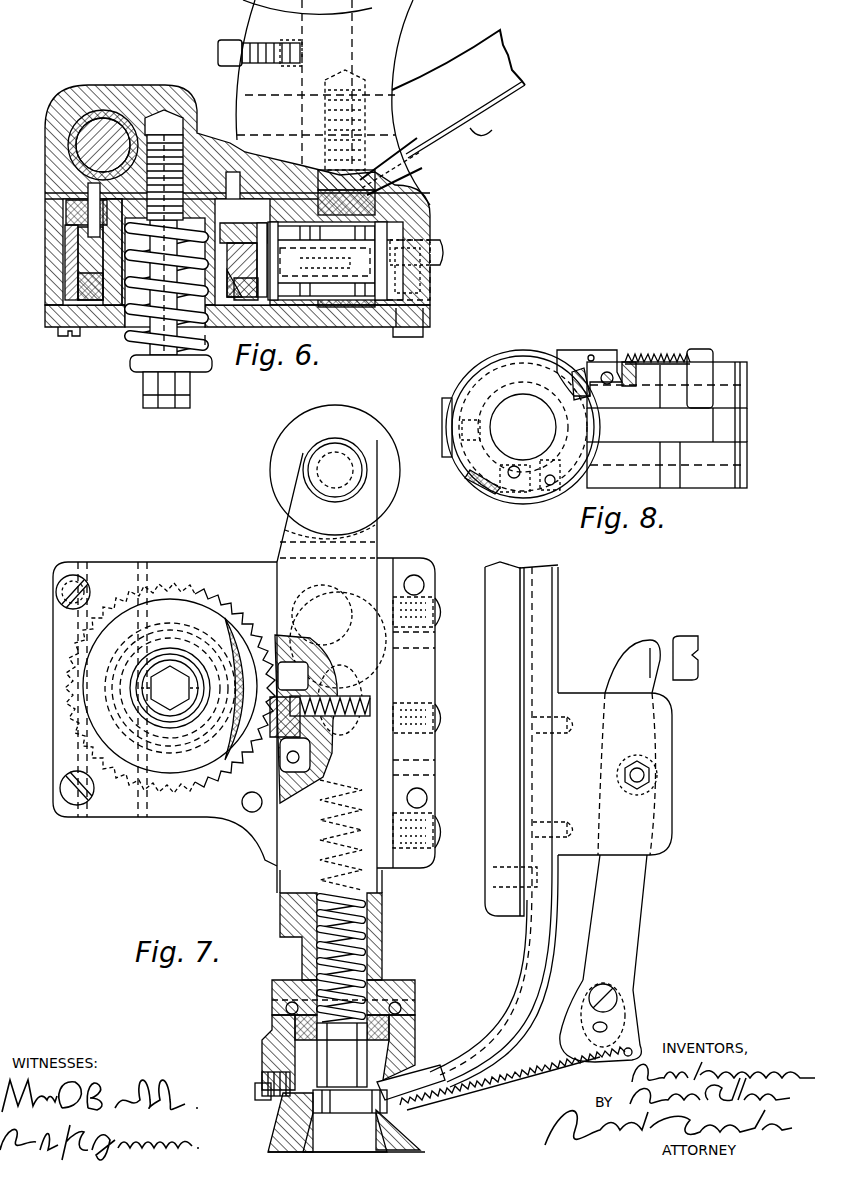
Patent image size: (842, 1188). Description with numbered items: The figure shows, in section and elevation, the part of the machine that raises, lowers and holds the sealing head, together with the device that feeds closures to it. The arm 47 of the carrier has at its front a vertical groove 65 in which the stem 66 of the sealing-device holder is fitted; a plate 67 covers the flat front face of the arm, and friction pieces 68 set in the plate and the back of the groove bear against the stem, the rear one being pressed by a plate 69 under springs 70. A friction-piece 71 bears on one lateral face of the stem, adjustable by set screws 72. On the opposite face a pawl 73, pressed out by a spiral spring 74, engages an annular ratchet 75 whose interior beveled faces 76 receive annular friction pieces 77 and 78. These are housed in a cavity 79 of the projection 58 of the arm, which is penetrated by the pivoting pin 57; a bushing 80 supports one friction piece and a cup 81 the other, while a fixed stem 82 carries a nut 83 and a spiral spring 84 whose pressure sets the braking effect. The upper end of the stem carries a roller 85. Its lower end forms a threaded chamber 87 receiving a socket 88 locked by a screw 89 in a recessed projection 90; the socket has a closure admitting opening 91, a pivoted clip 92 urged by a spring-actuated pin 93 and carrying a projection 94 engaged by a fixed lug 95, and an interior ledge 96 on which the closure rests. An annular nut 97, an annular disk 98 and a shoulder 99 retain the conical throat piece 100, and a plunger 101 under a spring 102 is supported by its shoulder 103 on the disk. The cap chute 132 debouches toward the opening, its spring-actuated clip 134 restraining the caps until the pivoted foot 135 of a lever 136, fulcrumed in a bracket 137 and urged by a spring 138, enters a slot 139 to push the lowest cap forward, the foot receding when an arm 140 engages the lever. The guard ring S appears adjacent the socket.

In FIG. 6, the arm 47 is at (388, 73).
In FIG. 7, the arm 47 is at (430, 670).
In FIG. 6, the pivoting pin 57 is at (103, 145).
In FIG. 6, the projection 58 is at (140, 88).
In FIG. 7, the projection 58 is at (207, 812).
In FIG. 6, the vertical groove 65 is at (387, 225).
In FIG. 7, the vertical groove 65 is at (293, 578).
In FIG. 6, the stem 66 is at (310, 280).
In FIG. 7, the stem 66 is at (370, 585).
In FIG. 6, the plate 67 is at (388, 317).
In FIG. 7, the plate 67 is at (122, 810).
In FIG. 6, the friction pieces 68 is at (375, 200).
In FIG. 6, the plate 69 is at (376, 176).
In FIG. 6, the springs 70 is at (405, 138).
In FIG. 6, the friction-piece 71 is at (390, 283).
In FIG. 7, the friction-piece 71 is at (385, 757).
In FIG. 6, the set screws 72 is at (440, 248).
In FIG. 7, the set screws 72 is at (441, 614).
In FIG. 6, the pawl 73 is at (250, 303).
In FIG. 7, the pawl 73 is at (282, 735).
In FIG. 7, the spiral spring 74 is at (320, 719).
In FIG. 6, the annular ratchet 75 is at (242, 270).
In FIG. 7, the annular ratchet 75 is at (240, 787).
In FIG. 6, the interior beveled faces 76 is at (278, 200).
In FIG. 6, the annular friction piece 77 is at (76, 211).
In FIG. 6, the annular friction piece 78 is at (100, 325).
In FIG. 7, the annular friction piece 78 is at (252, 633).
In FIG. 6, the cavity 79 is at (63, 266).
In FIG. 6, the bushing 80 is at (88, 190).
In FIG. 6, the cup 81 is at (185, 178).
In FIG. 6, the fixed stem 82 is at (132, 362).
In FIG. 7, the fixed stem 82 is at (170, 688).
In FIG. 6, the nut 83 is at (190, 398).
In FIG. 6, the spiral spring 84 is at (205, 345).
In FIG. 7, the roller 85 is at (395, 485).
In FIG. 7, the interiorly threaded chamber 87 is at (410, 1021).
In FIG. 7, the socket 88 is at (400, 1054).
In FIG. 7, the screw 89 is at (270, 1096).
In FIG. 7, the recessed projection 90 is at (280, 1072).
In FIG. 7, the closure admitting opening 91 is at (420, 1090).
In FIG. 8, the pivoted clip 92 is at (548, 492).
In FIG. 7, the pivoted clip 92 is at (365, 1113).
In FIG. 8, the spring-actuated pin 93 is at (490, 488).
In FIG. 8, the projection 94 is at (514, 480).
In FIG. 6, the fixed lug 95 is at (490, 132).
In FIG. 7, the interior ledge 96 is at (320, 1140).
In FIG. 7, the annular nut 97 is at (410, 995).
In FIG. 7, the annular disk 98 is at (295, 1022).
In FIG. 7, the shoulder 99 is at (275, 1125).
In FIG. 7, the conical throat piece 100 is at (280, 1054).
In FIG. 7, the plunger 101 is at (342, 1055).
In FIG. 7, the spring 102 is at (362, 940).
In FIG. 7, the shoulder 103 is at (285, 1010).
In FIG. 8, the cap chute 132 is at (740, 380).
In FIG. 7, the cap chute 132 is at (548, 636).
In FIG. 8, the spring-actuated clip 134 is at (606, 355).
In FIG. 7, the spring-actuated clip 134 is at (385, 1140).
In FIG. 7, the pivoted foot 135 is at (522, 1082).
In FIG. 7, the lever 136 is at (640, 900).
In FIG. 7, the bracket 137 is at (668, 829).
In FIG. 7, the spring 138 is at (585, 1063).
In FIG. 8, the slot 139 is at (738, 427).
In FIG. 7, the arm 140 is at (685, 648).
In FIG. 6, the glass S is at (483, 58).